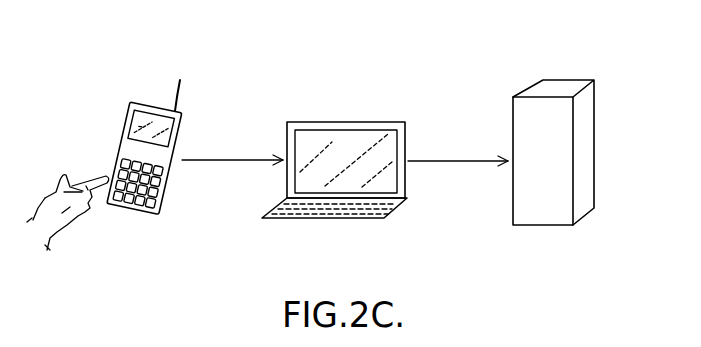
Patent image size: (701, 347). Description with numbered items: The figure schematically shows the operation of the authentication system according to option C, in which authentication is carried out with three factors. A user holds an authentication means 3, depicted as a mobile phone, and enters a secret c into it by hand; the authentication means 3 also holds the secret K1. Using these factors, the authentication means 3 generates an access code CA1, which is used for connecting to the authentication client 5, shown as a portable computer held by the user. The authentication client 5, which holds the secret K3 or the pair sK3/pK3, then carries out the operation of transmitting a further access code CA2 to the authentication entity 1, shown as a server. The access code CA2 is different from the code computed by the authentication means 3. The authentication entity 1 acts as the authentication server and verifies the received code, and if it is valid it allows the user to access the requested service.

The authentication entity 1 is at (600, 132).
The authentication means 3 is at (120, 130).
The authentication client 5 is at (345, 119).
The secret c is at (68, 212).
The access code CA1 is at (232, 147).
The access code CA2 is at (458, 147).